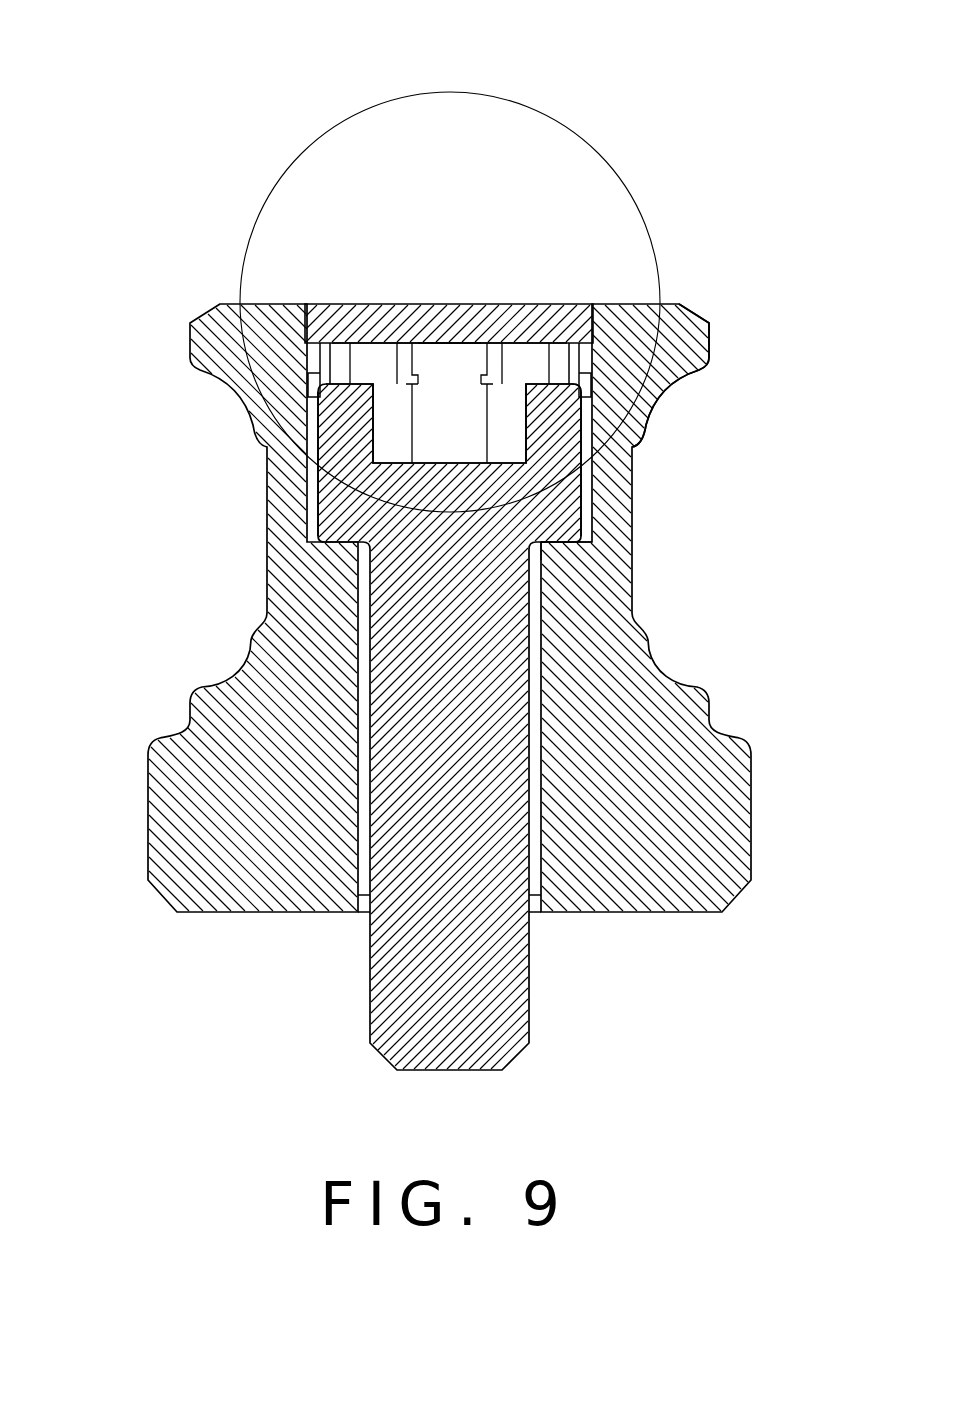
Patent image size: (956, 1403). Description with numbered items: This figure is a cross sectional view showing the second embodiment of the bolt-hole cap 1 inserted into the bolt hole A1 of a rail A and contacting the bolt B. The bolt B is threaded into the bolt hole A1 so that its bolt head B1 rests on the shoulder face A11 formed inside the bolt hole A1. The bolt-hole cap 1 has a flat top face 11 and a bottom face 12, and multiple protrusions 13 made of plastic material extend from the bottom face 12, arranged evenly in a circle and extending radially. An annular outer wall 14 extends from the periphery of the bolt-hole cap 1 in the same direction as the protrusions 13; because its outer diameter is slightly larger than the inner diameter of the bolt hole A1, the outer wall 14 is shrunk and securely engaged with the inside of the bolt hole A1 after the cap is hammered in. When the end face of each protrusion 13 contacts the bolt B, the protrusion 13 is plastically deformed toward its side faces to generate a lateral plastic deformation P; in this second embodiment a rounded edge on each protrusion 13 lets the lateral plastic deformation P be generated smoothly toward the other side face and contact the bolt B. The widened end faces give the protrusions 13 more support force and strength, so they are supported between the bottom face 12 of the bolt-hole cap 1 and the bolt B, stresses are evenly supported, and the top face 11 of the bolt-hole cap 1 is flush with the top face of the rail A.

The rail A is at (628, 508).
The bolt hole A1 is at (595, 427).
The shoulder face A11 is at (558, 547).
The bolt B is at (400, 690).
The bolt head B1 is at (375, 521).
The bolt-hole cap 1 is at (546, 340).
The top face 11 is at (510, 340).
The bottom face 12 is at (430, 345).
The protrusions 13 is at (493, 355).
The annular outer wall 14 is at (583, 343).
The lateral plastic deformation P is at (490, 390).